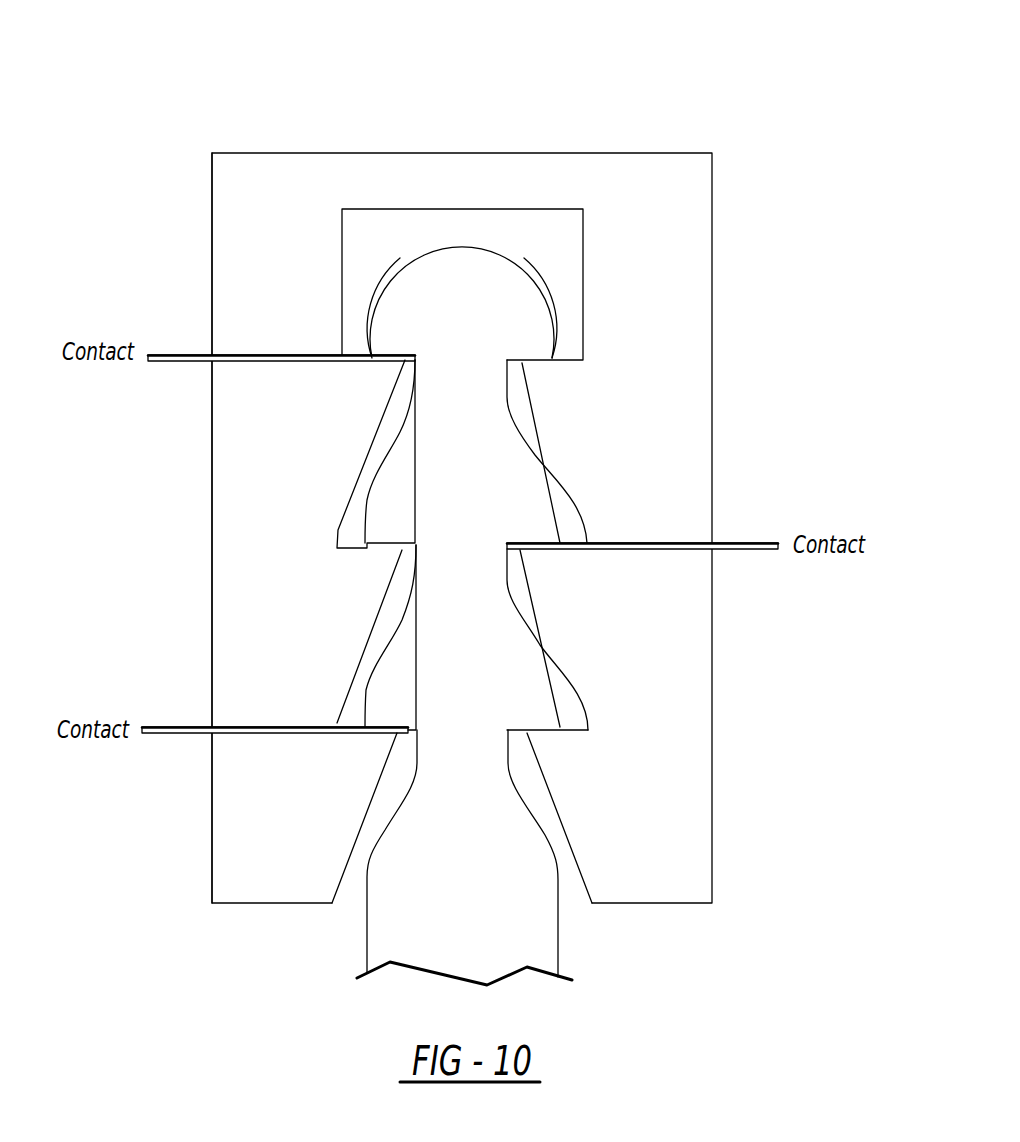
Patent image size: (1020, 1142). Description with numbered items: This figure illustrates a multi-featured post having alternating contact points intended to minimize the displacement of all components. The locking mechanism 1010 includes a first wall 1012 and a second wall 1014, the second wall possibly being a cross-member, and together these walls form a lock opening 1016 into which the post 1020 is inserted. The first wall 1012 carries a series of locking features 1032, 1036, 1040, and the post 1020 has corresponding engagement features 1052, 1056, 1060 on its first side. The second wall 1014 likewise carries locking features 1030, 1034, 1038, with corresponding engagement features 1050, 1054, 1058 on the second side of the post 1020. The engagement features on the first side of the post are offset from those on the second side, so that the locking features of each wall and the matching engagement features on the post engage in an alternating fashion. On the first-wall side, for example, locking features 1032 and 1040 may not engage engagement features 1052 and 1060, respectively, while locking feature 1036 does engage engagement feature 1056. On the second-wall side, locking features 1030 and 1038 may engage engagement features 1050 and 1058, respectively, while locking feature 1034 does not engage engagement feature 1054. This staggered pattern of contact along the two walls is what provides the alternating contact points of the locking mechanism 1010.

The locking mechanism 1010 is at (598, 97).
The first wall 1012 is at (683, 425).
The second wall 1014 is at (237, 483).
The lock opening 1016 is at (382, 233).
The post 1020 is at (422, 925).
The locking feature 1030 is at (385, 372).
The locking feature 1032 is at (540, 370).
The locking feature 1034 is at (378, 560).
The locking feature 1036 is at (542, 562).
The locking feature 1038 is at (373, 740).
The locking feature 1040 is at (553, 747).
The engagement feature 1050 is at (393, 342).
The engagement feature 1052 is at (537, 342).
The engagement feature 1054 is at (402, 524).
The engagement feature 1056 is at (525, 516).
The engagement feature 1058 is at (390, 693).
The engagement feature 1060 is at (533, 705).